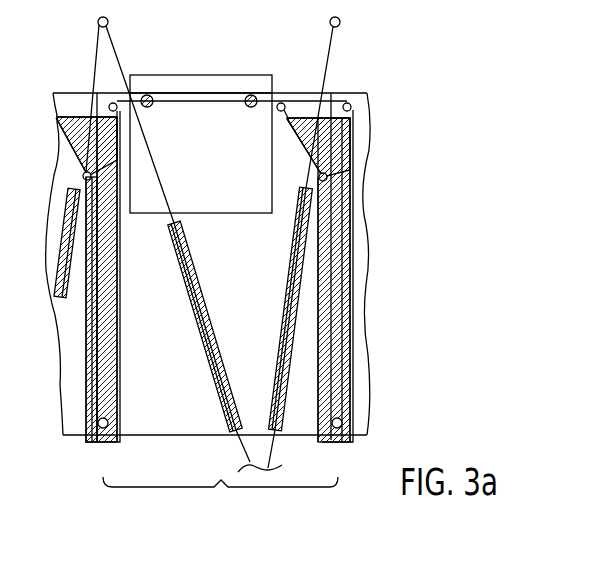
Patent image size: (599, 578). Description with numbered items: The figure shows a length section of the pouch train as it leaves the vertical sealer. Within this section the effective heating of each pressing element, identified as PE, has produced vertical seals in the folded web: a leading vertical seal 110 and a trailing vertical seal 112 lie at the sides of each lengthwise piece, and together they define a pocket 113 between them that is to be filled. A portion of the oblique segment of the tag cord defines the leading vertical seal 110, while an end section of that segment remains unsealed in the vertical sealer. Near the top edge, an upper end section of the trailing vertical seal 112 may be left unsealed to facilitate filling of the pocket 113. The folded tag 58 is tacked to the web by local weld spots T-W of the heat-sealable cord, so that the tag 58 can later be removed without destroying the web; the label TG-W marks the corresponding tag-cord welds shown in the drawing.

The tag 58 is at (220, 500).
The leading vertical seal 110 is at (326, 220).
The trailing vertical seal 112 is at (118, 295).
The pocket 113 is at (297, 88).
The effective heating of pressing element PE is at (117, 353).
The tag weld T-W is at (153, 96).
The tongue wire TG-W is at (283, 328).